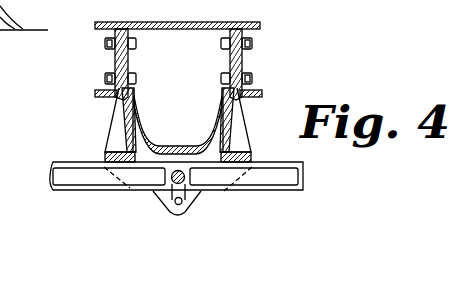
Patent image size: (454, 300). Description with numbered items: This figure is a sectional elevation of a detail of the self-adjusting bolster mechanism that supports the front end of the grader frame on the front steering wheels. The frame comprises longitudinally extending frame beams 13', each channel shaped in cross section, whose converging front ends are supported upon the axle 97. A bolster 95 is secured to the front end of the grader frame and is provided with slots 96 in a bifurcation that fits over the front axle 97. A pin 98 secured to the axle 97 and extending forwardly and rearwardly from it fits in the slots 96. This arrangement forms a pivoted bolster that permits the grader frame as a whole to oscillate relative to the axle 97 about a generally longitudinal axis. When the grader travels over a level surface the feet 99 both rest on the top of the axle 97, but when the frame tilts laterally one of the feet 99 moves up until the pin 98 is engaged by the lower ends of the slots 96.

The frame beam 13' is at (181, 61).
The bolster 95 is at (128, 120).
The slot 96 is at (182, 200).
The axle 97 is at (283, 182).
The pin 98 is at (168, 185).
The foot 99 is at (105, 157).